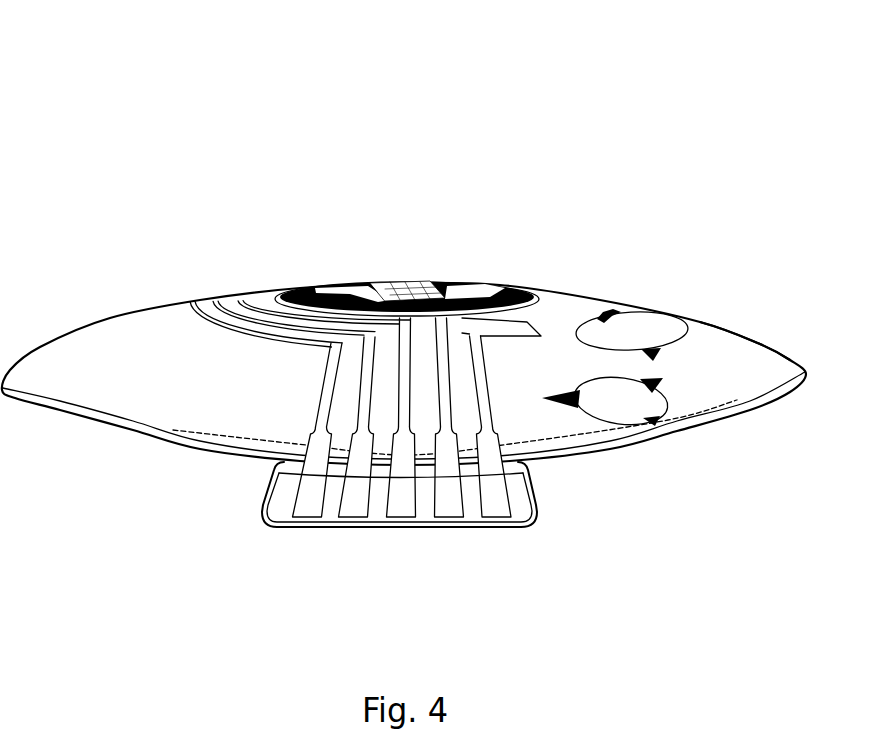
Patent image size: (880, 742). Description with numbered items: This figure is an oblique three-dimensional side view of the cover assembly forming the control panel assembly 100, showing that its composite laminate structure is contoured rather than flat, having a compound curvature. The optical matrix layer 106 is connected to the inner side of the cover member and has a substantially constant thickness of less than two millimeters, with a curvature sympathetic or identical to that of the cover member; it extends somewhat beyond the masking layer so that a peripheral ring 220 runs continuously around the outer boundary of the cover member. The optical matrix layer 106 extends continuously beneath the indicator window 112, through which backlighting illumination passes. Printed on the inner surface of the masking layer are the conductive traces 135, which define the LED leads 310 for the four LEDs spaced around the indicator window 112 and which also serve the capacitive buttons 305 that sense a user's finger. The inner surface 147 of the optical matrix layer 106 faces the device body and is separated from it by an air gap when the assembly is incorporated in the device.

The control panel assembly 100 is at (640, 92).
The peripheral ring 220 is at (16, 388).
The indicator window 112 is at (270, 299).
The capacitive buttons 305 is at (638, 318).
The inner surface 147 is at (727, 327).
The optical matrix layer 106 is at (753, 353).
The conductive traces 135 is at (488, 393).
The LED leads 310 is at (615, 514).